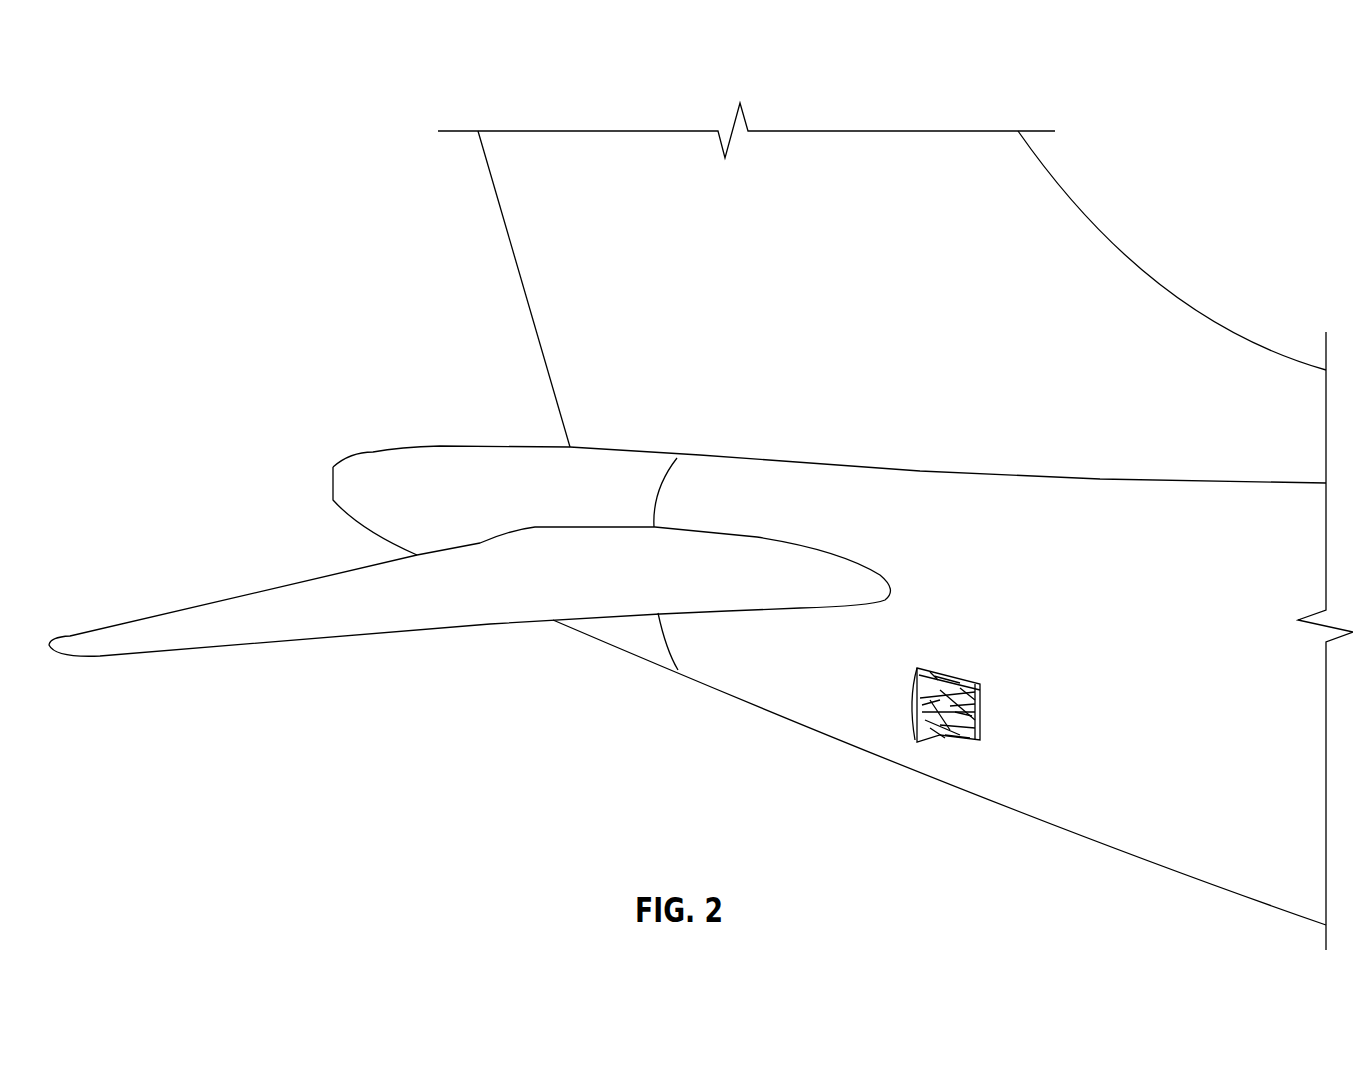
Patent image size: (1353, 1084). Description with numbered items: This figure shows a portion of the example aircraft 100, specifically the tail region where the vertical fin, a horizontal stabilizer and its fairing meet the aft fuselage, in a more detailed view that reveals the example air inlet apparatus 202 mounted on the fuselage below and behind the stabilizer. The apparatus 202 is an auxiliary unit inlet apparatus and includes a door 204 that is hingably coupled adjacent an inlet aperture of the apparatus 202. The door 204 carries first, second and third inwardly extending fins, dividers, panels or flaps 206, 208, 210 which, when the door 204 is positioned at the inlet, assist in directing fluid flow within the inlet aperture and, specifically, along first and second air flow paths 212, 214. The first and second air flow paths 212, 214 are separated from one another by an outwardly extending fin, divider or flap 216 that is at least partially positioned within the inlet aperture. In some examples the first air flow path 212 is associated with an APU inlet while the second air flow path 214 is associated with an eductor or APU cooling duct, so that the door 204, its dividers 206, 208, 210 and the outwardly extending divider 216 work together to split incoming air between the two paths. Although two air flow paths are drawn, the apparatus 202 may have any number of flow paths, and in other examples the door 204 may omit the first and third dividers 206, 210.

The aircraft 100 is at (1178, 85).
The air inlet apparatus 202 is at (984, 684).
The door 204 is at (915, 723).
The first divider 206 is at (930, 737).
The second divider 208 is at (947, 723).
The third divider 210 is at (933, 675).
The first air flow path 212 is at (982, 720).
The second air flow path 214 is at (985, 697).
The outwardly extending divider 216 is at (982, 707).